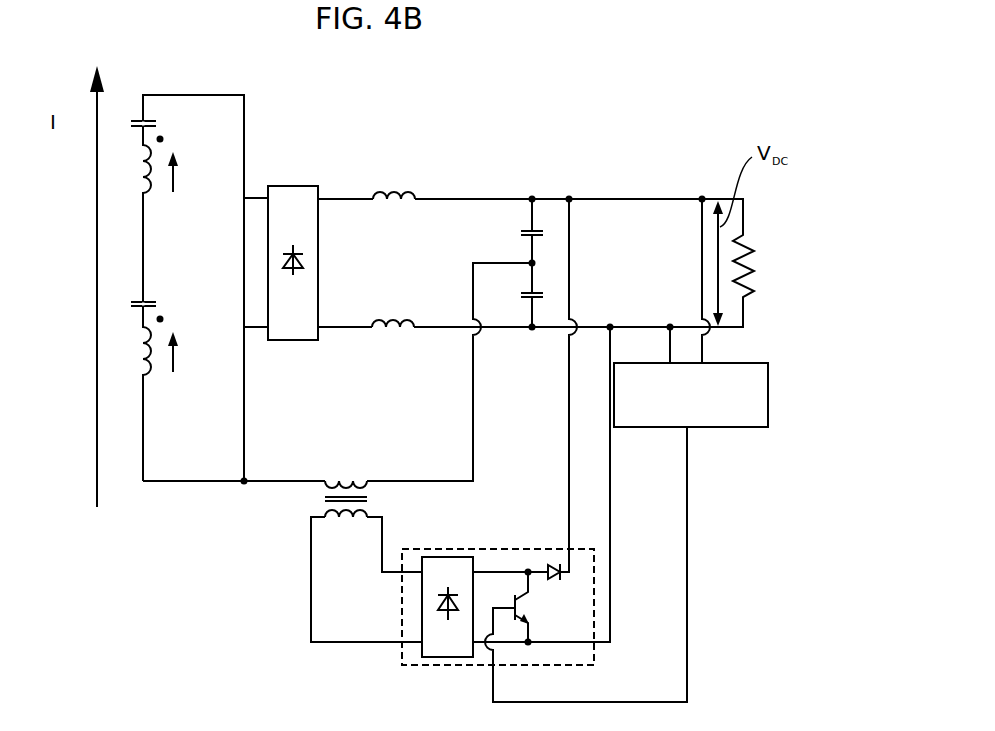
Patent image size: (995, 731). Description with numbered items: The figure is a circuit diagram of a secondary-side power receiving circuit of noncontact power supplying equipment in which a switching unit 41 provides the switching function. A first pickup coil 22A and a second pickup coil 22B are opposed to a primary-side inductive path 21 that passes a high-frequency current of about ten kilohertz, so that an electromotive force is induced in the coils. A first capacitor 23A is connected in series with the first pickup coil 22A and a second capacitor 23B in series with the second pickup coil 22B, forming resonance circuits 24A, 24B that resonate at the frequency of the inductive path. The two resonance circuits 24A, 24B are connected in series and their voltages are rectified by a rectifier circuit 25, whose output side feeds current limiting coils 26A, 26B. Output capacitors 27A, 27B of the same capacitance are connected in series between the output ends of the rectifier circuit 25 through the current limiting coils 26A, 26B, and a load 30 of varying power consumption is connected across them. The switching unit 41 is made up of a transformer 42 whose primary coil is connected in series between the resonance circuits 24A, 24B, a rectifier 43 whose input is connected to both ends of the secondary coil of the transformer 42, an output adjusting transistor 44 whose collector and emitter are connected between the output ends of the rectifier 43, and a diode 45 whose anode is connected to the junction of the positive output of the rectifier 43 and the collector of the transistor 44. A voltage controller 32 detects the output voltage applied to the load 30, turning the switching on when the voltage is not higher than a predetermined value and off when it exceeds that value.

The primary-side inductive path 21 is at (97, 262).
The first pickup coil 22A is at (155, 198).
The second pickup coil 22B is at (155, 378).
The first capacitor 23A is at (152, 118).
The second capacitor 23B is at (152, 299).
The resonance circuit 24A is at (128, 144).
The resonance circuit 24B is at (128, 324).
The rectifier circuit 25 is at (308, 186).
The current limiting coil 26A is at (406, 186).
The current limiting coil 26B is at (406, 316).
The output capacitor 27A is at (521, 230).
The output capacitor 27B is at (522, 291).
The load 30 is at (752, 276).
The voltage controller 32 is at (733, 427).
The switching unit 41 is at (432, 665).
The transformer 42 is at (340, 483).
The rectifier 43 is at (420, 625).
The output adjusting transistor 44 is at (522, 593).
The diode 45 is at (553, 583).